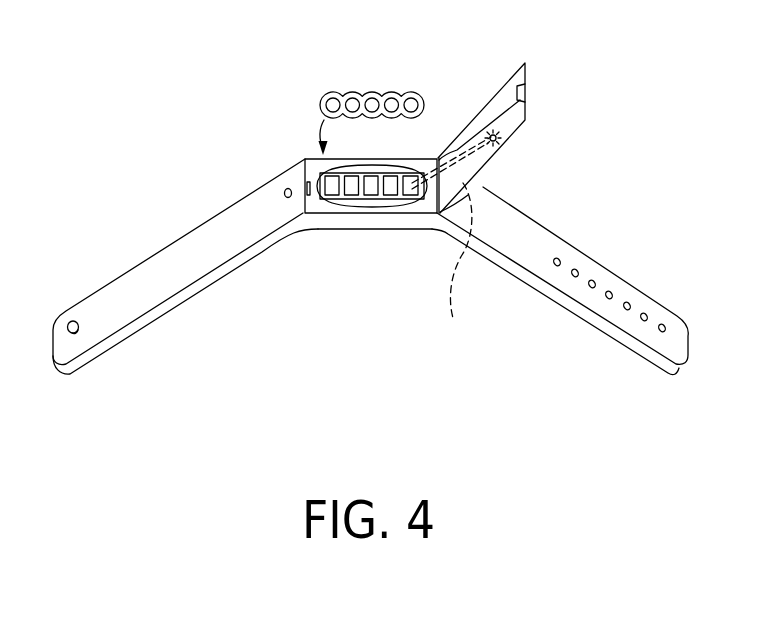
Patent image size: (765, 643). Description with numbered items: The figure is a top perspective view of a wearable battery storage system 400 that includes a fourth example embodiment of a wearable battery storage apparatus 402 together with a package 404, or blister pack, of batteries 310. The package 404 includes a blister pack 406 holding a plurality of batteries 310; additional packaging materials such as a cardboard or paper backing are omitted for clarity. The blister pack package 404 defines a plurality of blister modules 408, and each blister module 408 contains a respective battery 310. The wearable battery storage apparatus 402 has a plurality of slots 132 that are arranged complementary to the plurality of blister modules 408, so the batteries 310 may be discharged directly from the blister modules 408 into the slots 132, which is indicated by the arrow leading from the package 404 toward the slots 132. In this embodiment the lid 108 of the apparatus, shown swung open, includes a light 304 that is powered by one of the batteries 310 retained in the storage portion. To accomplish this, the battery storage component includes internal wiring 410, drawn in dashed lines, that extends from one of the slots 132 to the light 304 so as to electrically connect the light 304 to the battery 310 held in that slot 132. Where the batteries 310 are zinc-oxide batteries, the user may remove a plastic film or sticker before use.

The wearable battery storage system 400 is at (170, 188).
The wearable battery storage apparatus 402 is at (582, 191).
The package 404 is at (358, 77).
The blister pack 406 is at (413, 93).
The blister module 408 is at (357, 92).
The battery 310 is at (372, 93).
The light 304 is at (491, 130).
The lid 108 is at (517, 137).
The slot 132 is at (333, 184).
The internal wiring 410 is at (455, 266).